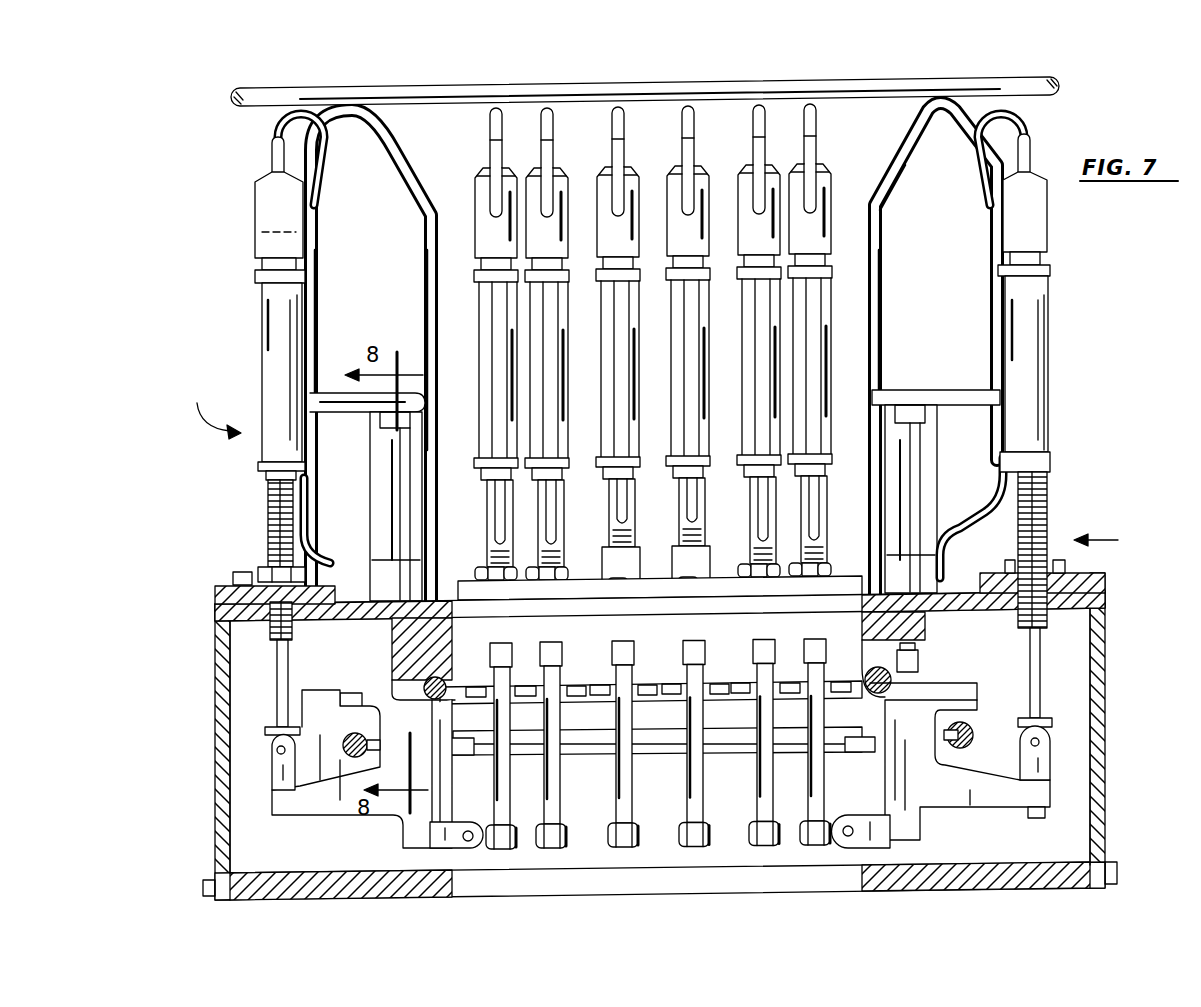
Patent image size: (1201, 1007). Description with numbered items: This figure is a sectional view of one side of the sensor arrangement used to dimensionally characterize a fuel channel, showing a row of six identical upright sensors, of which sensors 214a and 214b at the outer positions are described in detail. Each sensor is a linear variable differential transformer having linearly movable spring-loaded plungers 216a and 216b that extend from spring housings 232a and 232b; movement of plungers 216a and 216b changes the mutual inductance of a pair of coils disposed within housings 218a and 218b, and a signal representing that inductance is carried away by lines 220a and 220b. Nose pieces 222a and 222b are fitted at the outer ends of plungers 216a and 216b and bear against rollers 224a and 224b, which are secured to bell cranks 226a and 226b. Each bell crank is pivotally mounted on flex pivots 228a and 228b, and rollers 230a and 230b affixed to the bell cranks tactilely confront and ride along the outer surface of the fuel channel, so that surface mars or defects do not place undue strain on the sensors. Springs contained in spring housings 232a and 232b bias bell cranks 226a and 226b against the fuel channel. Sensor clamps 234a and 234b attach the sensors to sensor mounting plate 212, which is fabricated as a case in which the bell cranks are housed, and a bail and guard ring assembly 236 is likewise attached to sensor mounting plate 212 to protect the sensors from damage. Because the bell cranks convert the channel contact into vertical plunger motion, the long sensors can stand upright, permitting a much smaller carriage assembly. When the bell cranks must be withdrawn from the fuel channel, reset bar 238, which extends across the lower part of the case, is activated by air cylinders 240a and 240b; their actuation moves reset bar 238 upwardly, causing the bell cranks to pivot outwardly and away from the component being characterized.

The sensor mounting plate 212 is at (1102, 672).
The sensor 214a is at (1123, 538).
The sensor 214b is at (225, 410).
The plunger 216a is at (1030, 650).
The plunger 216b is at (288, 669).
The housing 218a is at (1050, 506).
The housing 218b is at (268, 537).
The line 220a is at (995, 513).
The line 220b is at (306, 550).
The nose piece 222a is at (1052, 718).
The nose piece 222b is at (358, 700).
The roller 224a is at (1055, 752).
The roller 224b is at (272, 750).
The bell crank 226a is at (972, 808).
The bell crank 226b is at (357, 815).
The flex pivot 228a is at (922, 685).
The flex pivot 228b is at (392, 650).
The roller 230a is at (843, 817).
The roller 230b is at (487, 801).
The spring housing 232a is at (1052, 322).
The spring housing 232b is at (307, 318).
The sensor clamp 234a is at (1092, 592).
The sensor clamp 234b is at (215, 592).
The bail and guard ring assembly 236 is at (1062, 85).
The reset bar 238 is at (700, 762).
The air cylinder 240a is at (993, 456).
The air cylinder 240b is at (298, 478).